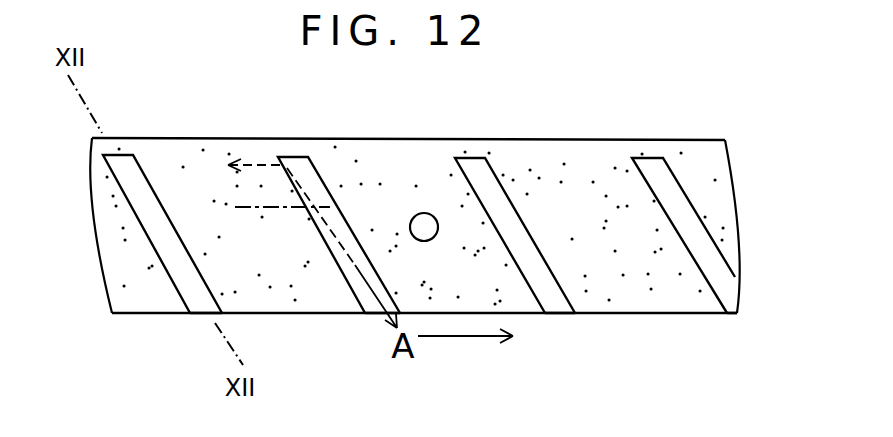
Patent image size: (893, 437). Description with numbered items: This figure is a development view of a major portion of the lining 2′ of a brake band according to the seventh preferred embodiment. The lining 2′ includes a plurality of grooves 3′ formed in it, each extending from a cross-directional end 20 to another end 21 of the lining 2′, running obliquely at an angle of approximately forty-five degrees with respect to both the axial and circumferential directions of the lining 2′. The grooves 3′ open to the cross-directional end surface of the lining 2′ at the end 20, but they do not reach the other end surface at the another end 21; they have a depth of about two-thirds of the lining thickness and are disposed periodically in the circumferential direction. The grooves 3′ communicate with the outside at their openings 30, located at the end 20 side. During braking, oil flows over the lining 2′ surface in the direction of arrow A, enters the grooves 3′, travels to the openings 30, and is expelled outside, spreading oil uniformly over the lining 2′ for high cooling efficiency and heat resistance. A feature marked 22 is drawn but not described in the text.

The lining 2′ is at (383, 165).
The another end 21 is at (610, 140).
The cross-directional end 20 is at (647, 313).
The hole 22 is at (424, 212).
The grooves 3′ is at (155, 222).
The openings 30 is at (203, 314).